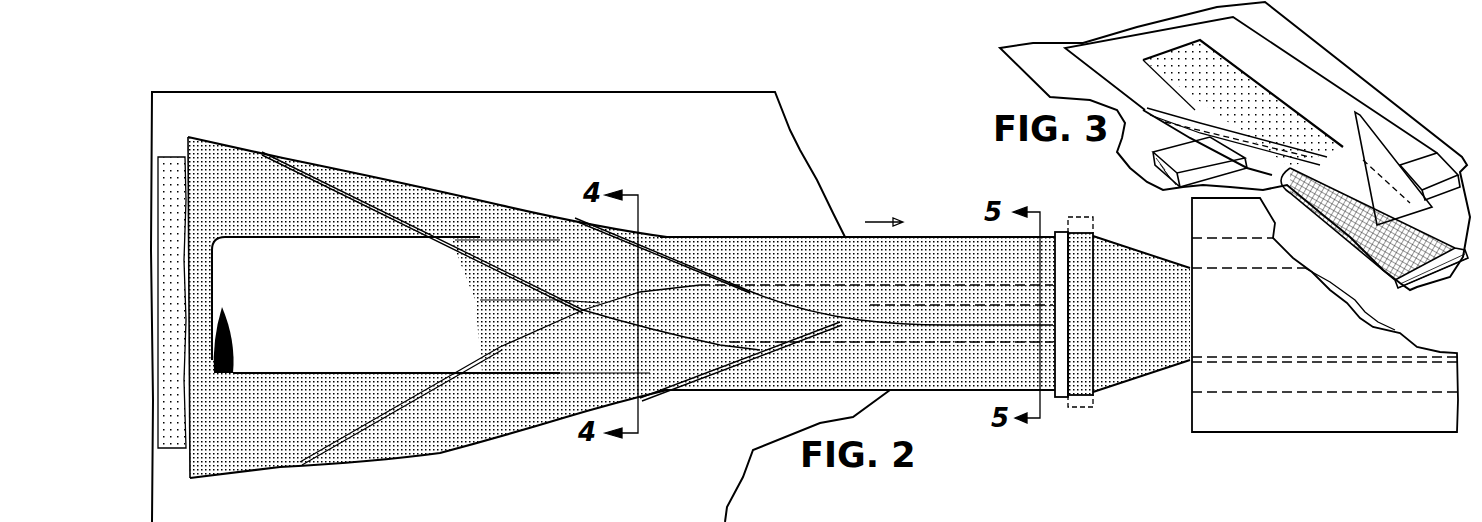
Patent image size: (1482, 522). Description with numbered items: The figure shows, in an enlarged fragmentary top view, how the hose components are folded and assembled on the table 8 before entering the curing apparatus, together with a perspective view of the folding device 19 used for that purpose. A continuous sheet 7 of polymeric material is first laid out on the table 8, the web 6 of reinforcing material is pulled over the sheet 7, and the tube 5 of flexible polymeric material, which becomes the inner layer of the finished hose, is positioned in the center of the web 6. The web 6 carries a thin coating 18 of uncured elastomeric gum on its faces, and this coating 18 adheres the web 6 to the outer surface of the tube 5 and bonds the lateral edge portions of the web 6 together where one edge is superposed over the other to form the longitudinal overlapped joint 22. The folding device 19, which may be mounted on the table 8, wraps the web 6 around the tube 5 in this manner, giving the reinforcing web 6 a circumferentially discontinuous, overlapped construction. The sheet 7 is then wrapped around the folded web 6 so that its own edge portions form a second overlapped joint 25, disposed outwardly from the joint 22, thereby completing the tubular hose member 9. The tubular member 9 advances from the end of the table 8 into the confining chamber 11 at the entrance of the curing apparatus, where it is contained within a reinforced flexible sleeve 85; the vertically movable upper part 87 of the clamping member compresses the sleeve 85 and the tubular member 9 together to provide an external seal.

In FIG. 2, the tube 5 is at (260, 375).
In FIG. 3, the tube 5 is at (1272, 88).
In FIG. 2, the web 6 is at (457, 232).
In FIG. 3, the web 6 is at (1335, 100).
In FIG. 2, the sheet 7 is at (477, 447).
In FIG. 2, the table 8 is at (470, 92).
In FIG. 3, the table 8 is at (1033, 43).
In FIG. 2, the tubular hose member 9 is at (935, 237).
In FIG. 2, the confining chamber 11 is at (1350, 432).
In FIG. 2, the coating 18 is at (337, 185).
In FIG. 3, the folding device 19 is at (1377, 140).
In FIG. 2, the overlapped joint 22 is at (977, 330).
In FIG. 2, the overlapped joint 25 is at (953, 317).
In FIG. 2, the tubular sleeve 85 is at (1130, 383).
In FIG. 2, the upper part 87 is at (1077, 403).